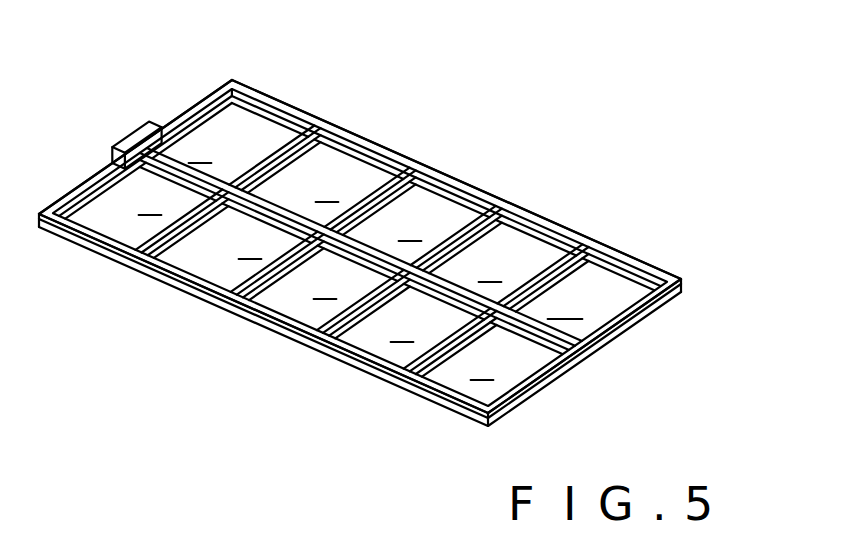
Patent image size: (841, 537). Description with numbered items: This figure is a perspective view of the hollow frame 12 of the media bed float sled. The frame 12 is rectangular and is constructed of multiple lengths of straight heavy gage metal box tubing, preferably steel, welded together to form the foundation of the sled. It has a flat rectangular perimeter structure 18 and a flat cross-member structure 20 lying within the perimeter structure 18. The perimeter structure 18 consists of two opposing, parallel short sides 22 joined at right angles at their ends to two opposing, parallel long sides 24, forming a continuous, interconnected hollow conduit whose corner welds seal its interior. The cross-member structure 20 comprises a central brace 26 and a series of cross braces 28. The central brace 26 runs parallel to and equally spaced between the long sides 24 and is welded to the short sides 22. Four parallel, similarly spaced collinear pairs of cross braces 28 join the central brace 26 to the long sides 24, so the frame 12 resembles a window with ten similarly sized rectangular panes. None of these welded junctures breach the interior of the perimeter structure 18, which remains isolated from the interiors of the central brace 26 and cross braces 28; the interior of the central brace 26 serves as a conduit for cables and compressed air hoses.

The frame 12 is at (520, 153).
The perimeter structure 18 is at (671, 276).
The cross-member structure 20 is at (197, 227).
The short sides 22 is at (197, 108).
The long sides 24 is at (553, 233).
The central brace 26 is at (548, 342).
The cross braces 28 is at (443, 370).